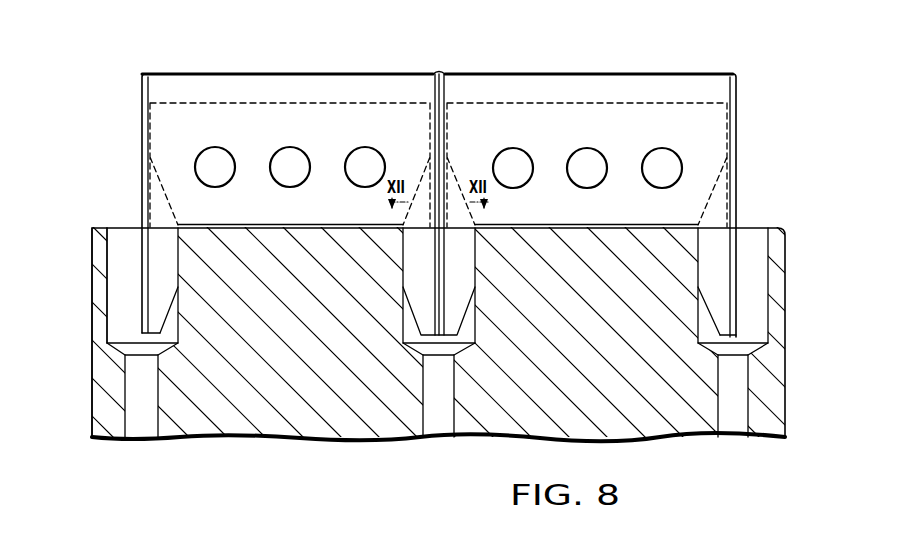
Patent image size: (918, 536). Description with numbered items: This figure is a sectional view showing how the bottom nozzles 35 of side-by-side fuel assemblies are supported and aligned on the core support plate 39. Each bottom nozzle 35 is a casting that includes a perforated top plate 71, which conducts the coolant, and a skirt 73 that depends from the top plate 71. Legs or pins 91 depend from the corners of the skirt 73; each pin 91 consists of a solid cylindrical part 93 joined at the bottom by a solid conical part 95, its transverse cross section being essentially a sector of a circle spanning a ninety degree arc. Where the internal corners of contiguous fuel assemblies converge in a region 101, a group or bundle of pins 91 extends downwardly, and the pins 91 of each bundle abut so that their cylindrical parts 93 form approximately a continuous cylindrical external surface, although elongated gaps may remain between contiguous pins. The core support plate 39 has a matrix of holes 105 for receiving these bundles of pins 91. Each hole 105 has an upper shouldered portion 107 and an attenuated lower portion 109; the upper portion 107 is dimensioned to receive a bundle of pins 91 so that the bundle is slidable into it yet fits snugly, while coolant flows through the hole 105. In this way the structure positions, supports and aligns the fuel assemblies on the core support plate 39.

The bottom nozzle 35 is at (472, 185).
The core support plate 39 is at (459, 326).
The top plate 71 is at (510, 84).
The skirt 73 is at (172, 117).
The pin 91 is at (720, 272).
The solid cylindrical part 93 is at (160, 300).
The solid conical part 95 is at (720, 324).
The region 101 is at (438, 73).
The hole 105 is at (121, 236).
The upper shouldered portion 107 is at (463, 334).
The attenuated lower portion 109 is at (739, 424).